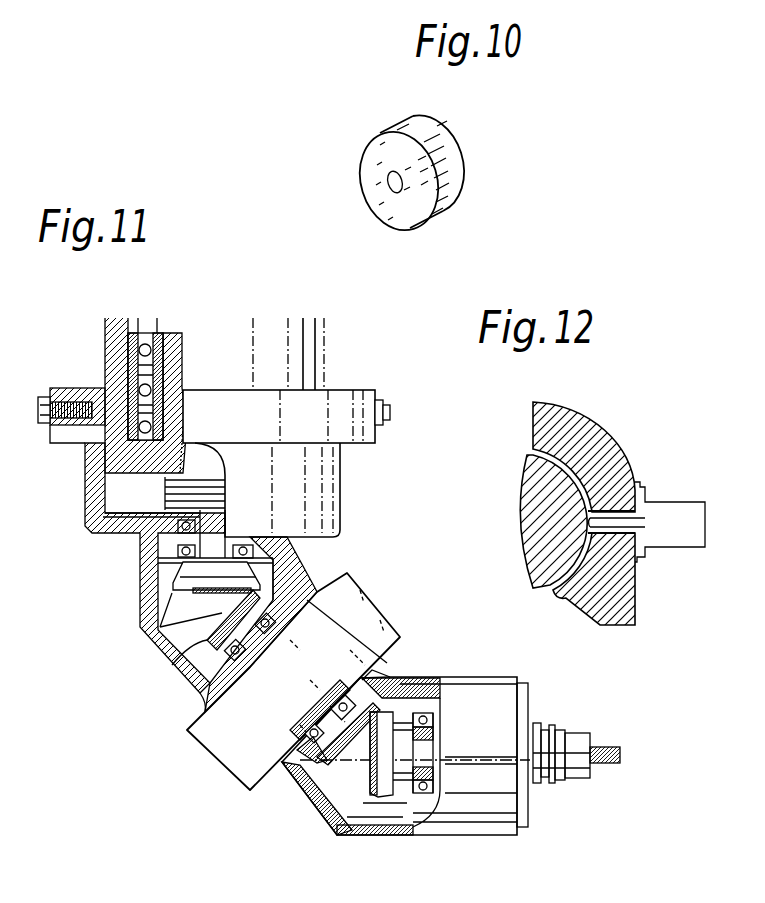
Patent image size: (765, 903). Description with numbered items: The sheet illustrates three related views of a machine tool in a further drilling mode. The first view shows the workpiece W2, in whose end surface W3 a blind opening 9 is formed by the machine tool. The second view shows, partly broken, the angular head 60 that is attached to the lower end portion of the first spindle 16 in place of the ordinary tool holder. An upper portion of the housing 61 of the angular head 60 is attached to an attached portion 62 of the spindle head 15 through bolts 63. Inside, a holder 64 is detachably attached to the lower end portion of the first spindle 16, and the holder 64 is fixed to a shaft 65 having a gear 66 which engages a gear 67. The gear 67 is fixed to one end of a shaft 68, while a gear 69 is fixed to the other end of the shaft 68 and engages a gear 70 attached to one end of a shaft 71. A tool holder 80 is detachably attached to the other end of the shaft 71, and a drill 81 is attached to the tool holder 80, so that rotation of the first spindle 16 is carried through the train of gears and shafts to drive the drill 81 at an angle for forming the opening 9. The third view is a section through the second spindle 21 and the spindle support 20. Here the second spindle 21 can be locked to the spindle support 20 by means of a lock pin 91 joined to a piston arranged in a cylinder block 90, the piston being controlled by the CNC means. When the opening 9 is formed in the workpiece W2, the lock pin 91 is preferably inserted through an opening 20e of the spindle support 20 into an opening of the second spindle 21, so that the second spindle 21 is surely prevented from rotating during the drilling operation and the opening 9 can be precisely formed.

In FIG. 10, the blind opening 9 is at (388, 180).
In FIG. 10, the workpiece W2 is at (467, 200).
In FIG. 10, the end surface W3 is at (390, 209).
In FIG. 11, the spindle head 15 is at (105, 352).
In FIG. 11, the attached portion 62 is at (77, 390).
In FIG. 11, the bolts 63 is at (45, 412).
In FIG. 11, the first spindle 16 is at (148, 474).
In FIG. 11, the housing 61 is at (87, 510).
In FIG. 11, the holder 64 is at (160, 487).
In FIG. 11, the shaft 65 is at (203, 537).
In FIG. 11, the gear 66 is at (177, 580).
In FIG. 11, the gear 67 is at (207, 634).
In FIG. 11, the angular head 60 is at (398, 594).
In FIG. 11, the shaft 68 is at (292, 760).
In FIG. 11, the gear 69 is at (323, 803).
In FIG. 11, the gear 70 is at (381, 797).
In FIG. 11, the shaft 71 is at (402, 780).
In FIG. 11, the tool holder 80 is at (573, 773).
In FIG. 11, the drill 81 is at (604, 767).
In FIG. 12, the second spindle 21 is at (528, 480).
In FIG. 12, the opening 20e is at (616, 501).
In FIG. 12, the lock pin 91 is at (620, 520).
In FIG. 12, the cylinder block 90 is at (695, 543).
In FIG. 12, the spindle support 20 is at (628, 582).